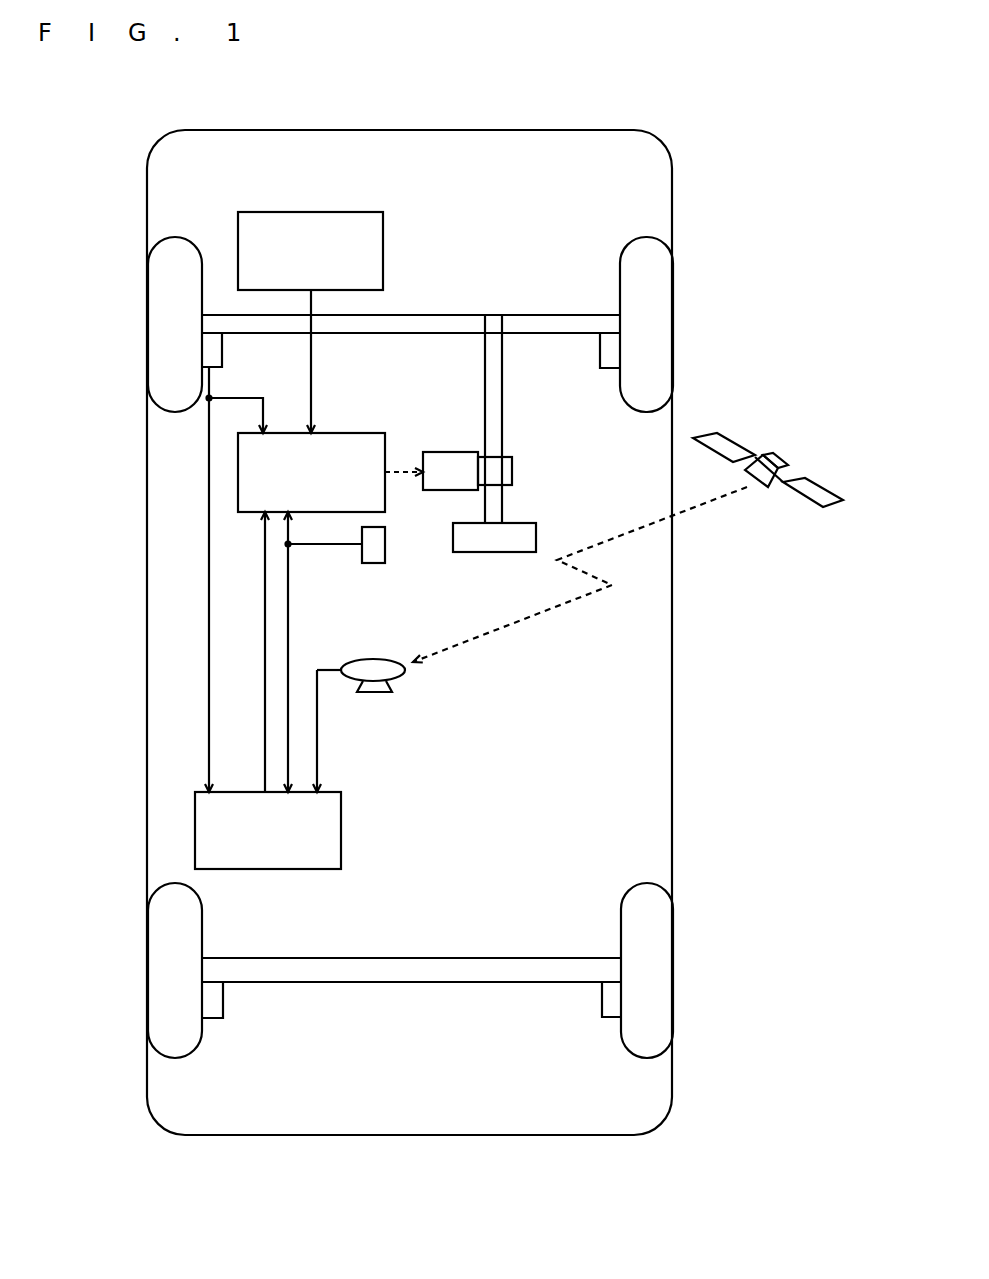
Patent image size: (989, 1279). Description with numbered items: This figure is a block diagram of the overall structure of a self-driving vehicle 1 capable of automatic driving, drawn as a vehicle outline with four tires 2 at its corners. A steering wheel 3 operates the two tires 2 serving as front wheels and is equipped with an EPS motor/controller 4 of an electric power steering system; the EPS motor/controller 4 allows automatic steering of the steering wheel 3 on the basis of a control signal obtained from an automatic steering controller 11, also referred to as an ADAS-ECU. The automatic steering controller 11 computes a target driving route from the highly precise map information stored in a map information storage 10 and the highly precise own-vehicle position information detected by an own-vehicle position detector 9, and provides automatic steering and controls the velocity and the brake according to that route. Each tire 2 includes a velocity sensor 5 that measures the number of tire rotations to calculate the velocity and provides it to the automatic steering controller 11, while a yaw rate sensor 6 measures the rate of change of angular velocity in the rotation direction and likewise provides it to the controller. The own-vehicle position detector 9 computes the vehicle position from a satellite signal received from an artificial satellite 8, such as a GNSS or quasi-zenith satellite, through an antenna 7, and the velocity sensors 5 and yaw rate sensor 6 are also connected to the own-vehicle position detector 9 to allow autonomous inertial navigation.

The self-driving vehicle 1 is at (410, 130).
The tires 2 is at (157, 334).
The steering wheel 3 is at (536, 539).
The EPS motor/controller 4 is at (450, 452).
The velocity sensor 5 is at (222, 352).
The yaw rate sensor 6 is at (385, 545).
The antenna 7 is at (388, 688).
The artificial satellite 8 is at (771, 452).
The own-vehicle position detector 9 is at (341, 831).
The map information storage 10 is at (348, 212).
The automatic steering controller 11 is at (350, 433).